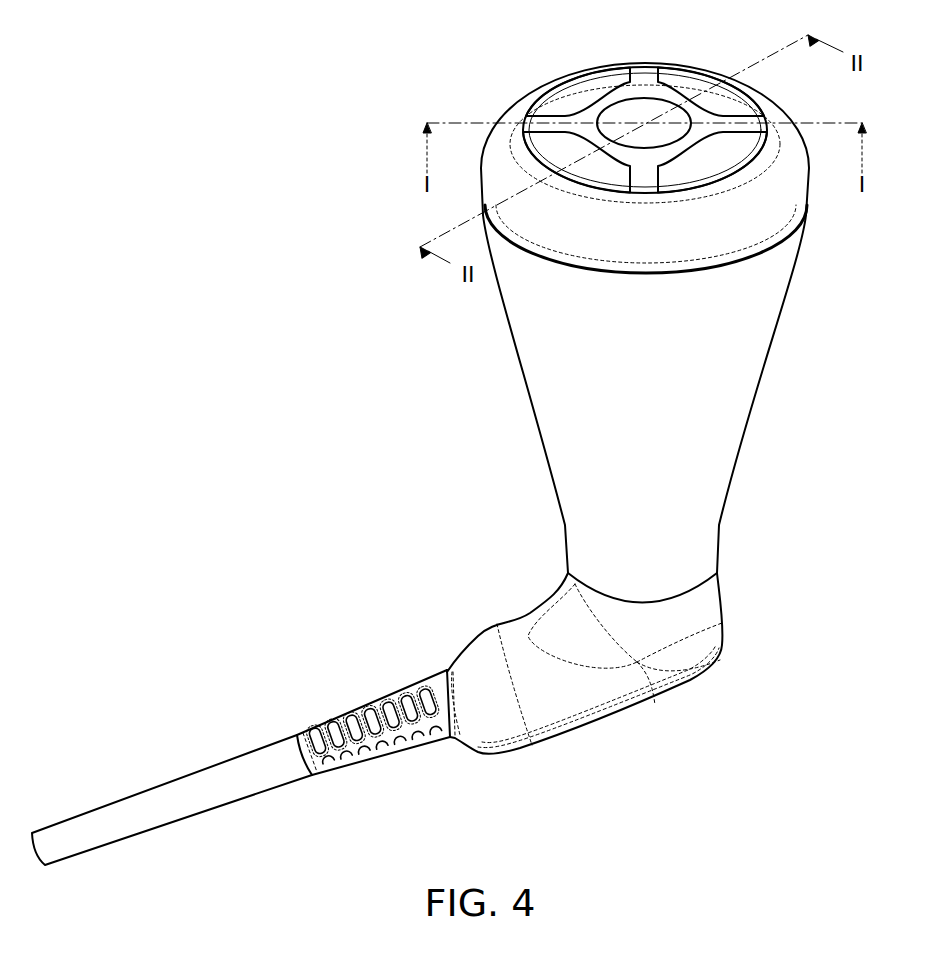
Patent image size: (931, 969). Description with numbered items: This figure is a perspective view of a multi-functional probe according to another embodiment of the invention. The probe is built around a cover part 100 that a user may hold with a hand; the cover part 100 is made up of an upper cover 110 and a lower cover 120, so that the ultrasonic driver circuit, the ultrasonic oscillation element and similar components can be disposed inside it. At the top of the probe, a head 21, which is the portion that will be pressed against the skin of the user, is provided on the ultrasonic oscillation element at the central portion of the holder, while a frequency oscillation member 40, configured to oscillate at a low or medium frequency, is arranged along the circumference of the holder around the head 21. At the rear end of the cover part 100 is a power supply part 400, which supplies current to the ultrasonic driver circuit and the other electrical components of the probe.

The head 21 is at (642, 117).
The frequency oscillation member 40 is at (567, 93).
The cover part 100 is at (410, 352).
The upper cover 110 is at (557, 232).
The lower cover 120 is at (567, 423).
The power supply part 400 is at (573, 715).